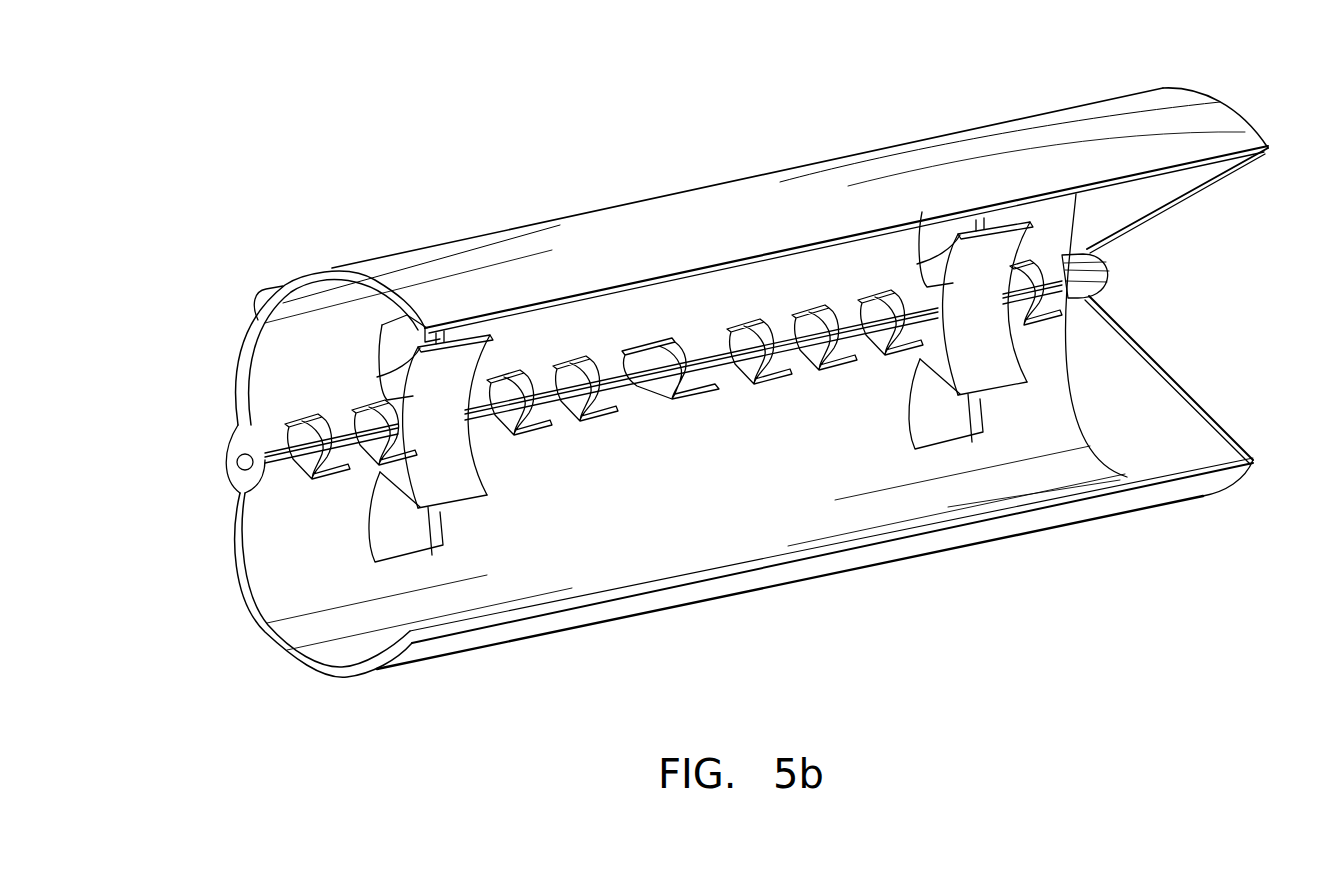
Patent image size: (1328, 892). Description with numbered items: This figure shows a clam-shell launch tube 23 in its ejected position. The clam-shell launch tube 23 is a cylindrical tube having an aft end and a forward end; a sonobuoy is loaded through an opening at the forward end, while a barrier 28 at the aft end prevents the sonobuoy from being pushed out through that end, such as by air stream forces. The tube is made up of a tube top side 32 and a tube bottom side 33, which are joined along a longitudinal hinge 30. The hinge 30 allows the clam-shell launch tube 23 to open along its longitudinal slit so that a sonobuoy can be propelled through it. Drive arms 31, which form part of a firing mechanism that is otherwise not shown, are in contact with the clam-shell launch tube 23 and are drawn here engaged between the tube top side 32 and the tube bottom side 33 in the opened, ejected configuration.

The clam-shell launch tube 23 is at (820, 122).
The barrier 28 is at (1143, 392).
The longitudinal hinge 30 is at (1100, 258).
The drive arms 31 is at (457, 502).
The tube top side 32 is at (645, 202).
The tube bottom side 33 is at (747, 590).